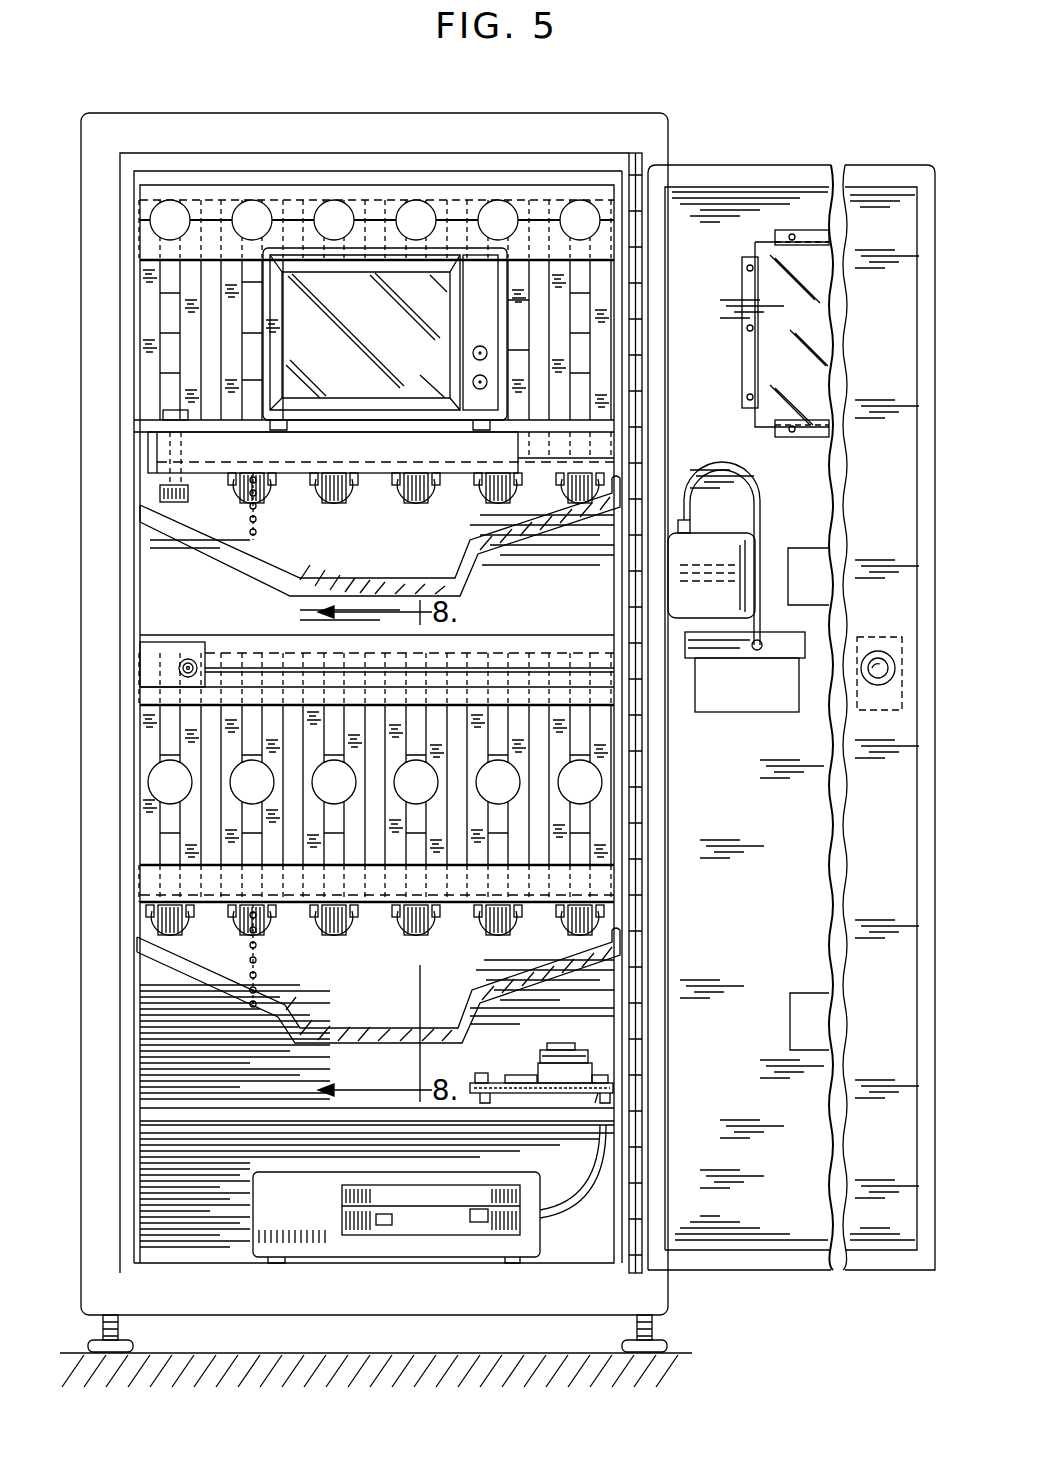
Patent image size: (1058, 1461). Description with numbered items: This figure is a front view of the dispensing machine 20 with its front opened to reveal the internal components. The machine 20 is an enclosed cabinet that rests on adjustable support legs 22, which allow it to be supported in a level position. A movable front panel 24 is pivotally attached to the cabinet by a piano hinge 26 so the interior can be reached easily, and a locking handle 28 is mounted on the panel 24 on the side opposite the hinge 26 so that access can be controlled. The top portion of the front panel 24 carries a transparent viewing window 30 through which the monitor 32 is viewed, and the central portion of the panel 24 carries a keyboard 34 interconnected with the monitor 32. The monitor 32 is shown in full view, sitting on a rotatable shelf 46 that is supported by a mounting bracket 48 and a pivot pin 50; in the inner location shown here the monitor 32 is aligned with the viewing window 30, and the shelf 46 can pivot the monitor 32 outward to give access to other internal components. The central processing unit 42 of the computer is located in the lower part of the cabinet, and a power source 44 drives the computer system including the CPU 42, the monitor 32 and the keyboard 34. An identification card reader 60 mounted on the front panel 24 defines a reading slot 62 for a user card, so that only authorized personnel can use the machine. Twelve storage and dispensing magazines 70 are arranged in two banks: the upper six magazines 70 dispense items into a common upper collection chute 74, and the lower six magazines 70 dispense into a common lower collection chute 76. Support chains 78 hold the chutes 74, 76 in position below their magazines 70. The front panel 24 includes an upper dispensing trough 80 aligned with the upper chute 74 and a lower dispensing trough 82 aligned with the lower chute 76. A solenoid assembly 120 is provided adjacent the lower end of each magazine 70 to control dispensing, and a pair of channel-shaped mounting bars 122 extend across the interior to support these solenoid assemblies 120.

The dispensing machine 20 is at (325, 104).
The adjustable support legs 22 is at (118, 1332).
The movable front panel 24 is at (898, 838).
The piano hinge 26 is at (641, 948).
The locking handle 28 is at (888, 655).
The transparent viewing window 30 is at (775, 287).
The monitor 32 is at (352, 314).
The keyboard 34 is at (737, 700).
The central processing unit 42 is at (265, 1218).
The power source 44 is at (608, 1062).
The rotatable shelf 46 is at (190, 450).
The mounting bracket 48 is at (140, 434).
The pivot pin 50 is at (165, 410).
The identification card reader 60 is at (728, 548).
The reading slot 62 is at (660, 578).
The storage and dispensing magazines 70 is at (230, 303).
The upper collection chute 74 is at (527, 556).
The lower collection chute 76 is at (195, 995).
The support chains 78 is at (245, 540).
The upper dispensing trough 80 is at (792, 577).
The lower dispensing trough 82 is at (794, 1030).
The solenoid assembly 120 is at (245, 480).
The channel-shaped mounting bars 122 is at (598, 432).